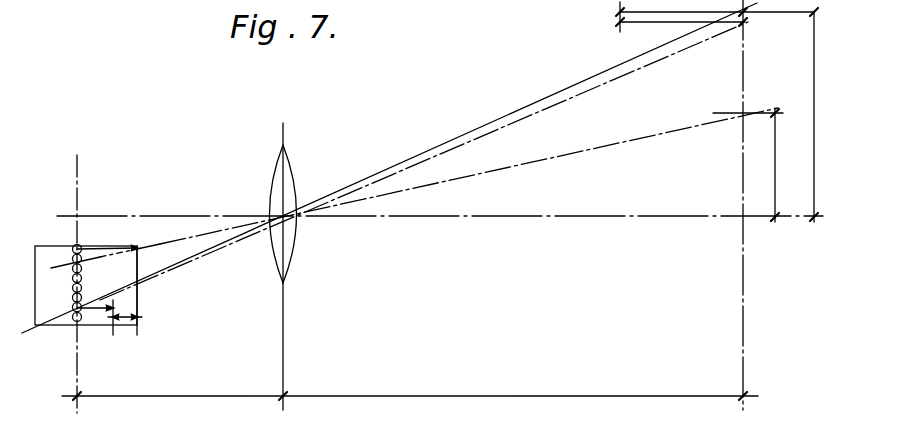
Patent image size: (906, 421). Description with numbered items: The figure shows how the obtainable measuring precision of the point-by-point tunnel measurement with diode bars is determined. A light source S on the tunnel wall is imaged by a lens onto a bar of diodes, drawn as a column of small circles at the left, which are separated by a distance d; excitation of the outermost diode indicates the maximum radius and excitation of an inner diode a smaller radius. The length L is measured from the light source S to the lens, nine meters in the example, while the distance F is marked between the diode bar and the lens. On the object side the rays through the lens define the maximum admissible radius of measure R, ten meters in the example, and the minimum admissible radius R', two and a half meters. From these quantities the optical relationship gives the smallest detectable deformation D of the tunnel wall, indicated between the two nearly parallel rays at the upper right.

The smallest detectable deformation D is at (698, 17).
The maximum admissible radius of measure R is at (803, 115).
The minimum admissible radius R' is at (748, 165).
The light source S is at (424, 161).
The focal length / object distance F is at (180, 379).
The length from light source to lens L is at (513, 382).
The object spacing d is at (109, 327).